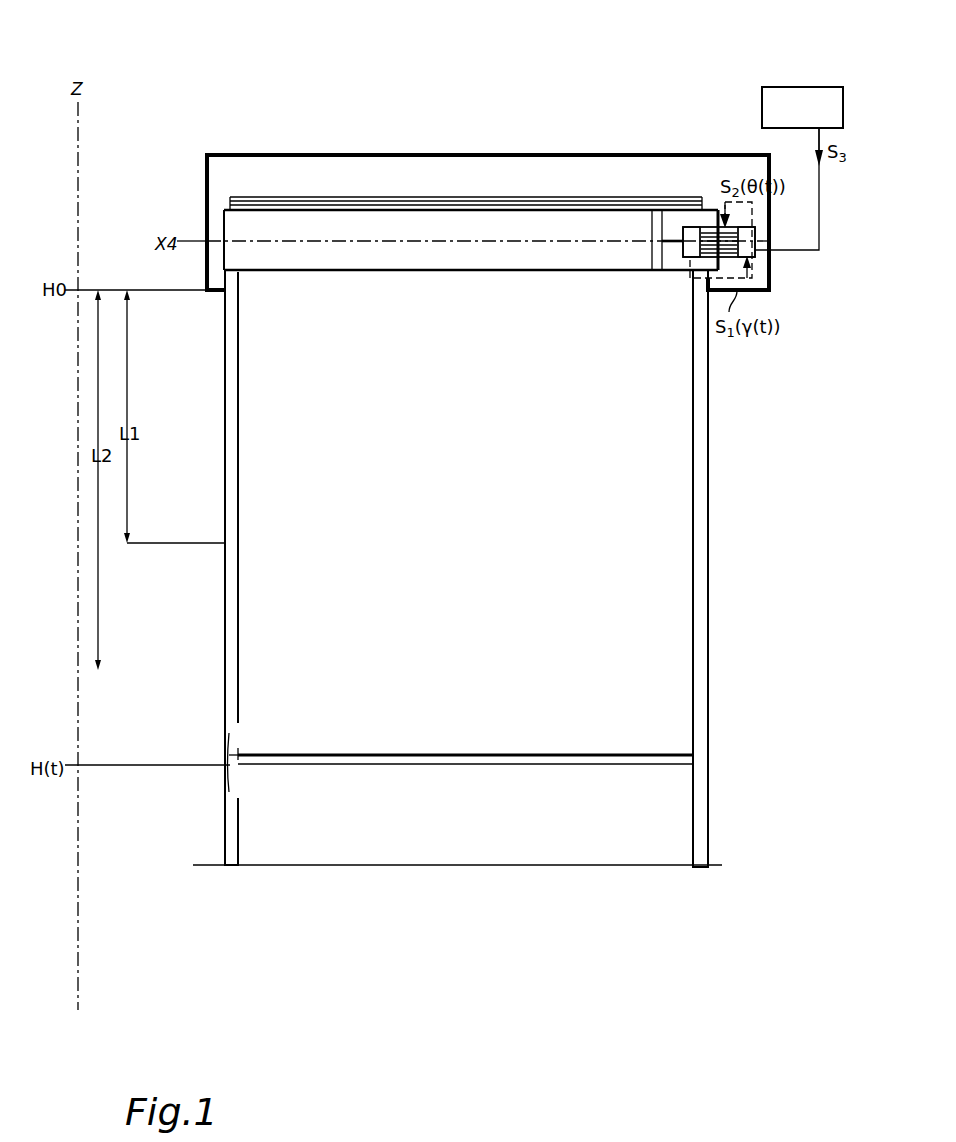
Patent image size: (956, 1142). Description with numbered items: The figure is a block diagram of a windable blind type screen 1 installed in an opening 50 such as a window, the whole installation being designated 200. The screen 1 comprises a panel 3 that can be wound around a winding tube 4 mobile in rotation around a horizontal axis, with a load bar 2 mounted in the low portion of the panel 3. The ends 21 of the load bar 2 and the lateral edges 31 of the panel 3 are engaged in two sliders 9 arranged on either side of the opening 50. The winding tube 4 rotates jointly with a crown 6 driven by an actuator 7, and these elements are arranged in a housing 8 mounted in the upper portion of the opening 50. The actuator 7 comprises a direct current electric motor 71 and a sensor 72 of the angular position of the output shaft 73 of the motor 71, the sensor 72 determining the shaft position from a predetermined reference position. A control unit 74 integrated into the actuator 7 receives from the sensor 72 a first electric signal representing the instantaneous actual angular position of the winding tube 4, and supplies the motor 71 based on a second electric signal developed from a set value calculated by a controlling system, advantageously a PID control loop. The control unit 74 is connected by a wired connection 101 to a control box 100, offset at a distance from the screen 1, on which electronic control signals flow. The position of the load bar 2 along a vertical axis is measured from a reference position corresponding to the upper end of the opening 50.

The home automation installation 200 is at (526, 104).
The screen 1 is at (200, 362).
The load bar 2 is at (375, 766).
The panel 3 is at (465, 512).
The winding tube 4 is at (365, 272).
The crown 6 is at (658, 268).
The actuator 7 is at (710, 214).
The direct current electric motor 71 is at (708, 226).
The sensor 72 is at (691, 235).
The output shaft 73 is at (672, 240).
The control unit 74 is at (755, 248).
The housing 8 is at (290, 155).
The sliders 9 is at (231, 637).
The ends of the load bar 21 is at (227, 753).
The lateral edges of the panel 31 is at (233, 747).
The opening 50 is at (465, 815).
The control box 100 is at (802, 107).
The wired connection 101 is at (819, 250).